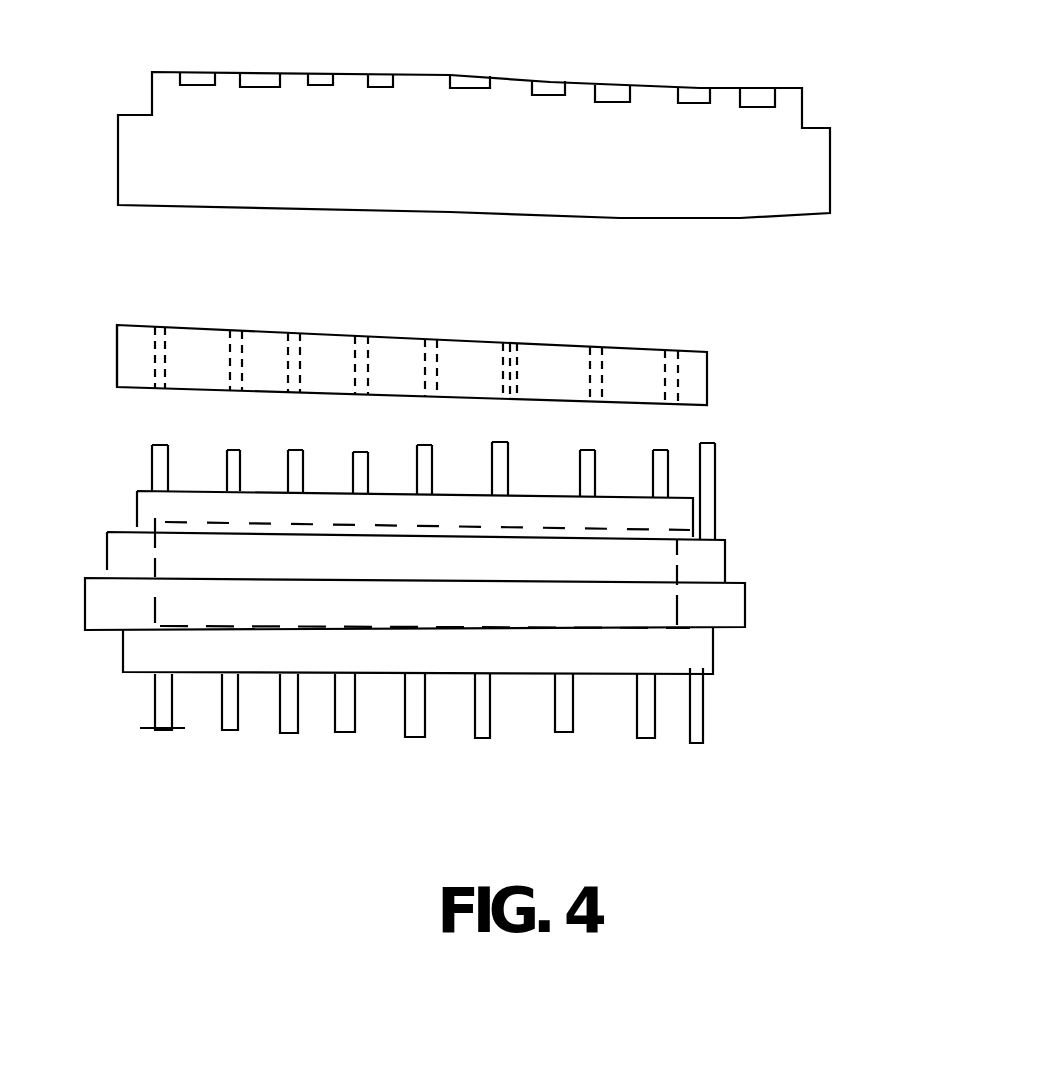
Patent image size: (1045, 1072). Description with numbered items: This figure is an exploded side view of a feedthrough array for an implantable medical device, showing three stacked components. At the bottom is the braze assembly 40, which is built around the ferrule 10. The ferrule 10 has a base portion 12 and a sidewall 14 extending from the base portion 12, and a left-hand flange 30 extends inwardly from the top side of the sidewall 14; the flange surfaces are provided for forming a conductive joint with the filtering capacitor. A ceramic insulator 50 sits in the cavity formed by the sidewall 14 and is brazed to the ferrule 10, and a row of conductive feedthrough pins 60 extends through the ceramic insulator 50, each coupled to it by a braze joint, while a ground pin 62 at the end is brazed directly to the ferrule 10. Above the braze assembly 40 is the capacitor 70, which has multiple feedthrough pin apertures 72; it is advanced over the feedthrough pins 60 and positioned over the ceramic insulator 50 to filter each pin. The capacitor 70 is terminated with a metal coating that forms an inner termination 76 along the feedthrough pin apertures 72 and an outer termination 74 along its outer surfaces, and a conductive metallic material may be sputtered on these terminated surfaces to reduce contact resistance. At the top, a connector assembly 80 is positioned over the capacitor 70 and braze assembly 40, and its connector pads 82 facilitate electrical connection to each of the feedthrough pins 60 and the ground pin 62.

The ferrule 10 is at (705, 606).
The base portion 12 is at (715, 655).
The sidewall 14 is at (705, 555).
The left-hand flange 30 is at (672, 520).
The braze assembly 40 is at (820, 577).
The ceramic insulator 50 is at (172, 555).
The feedthrough pins 60 is at (482, 743).
The ground pin 62 is at (693, 743).
The capacitor 70 is at (697, 377).
The feedthrough pin apertures 72 is at (655, 355).
The outer termination 74 is at (102, 363).
The inner termination 76 is at (531, 347).
The connector assembly 80 is at (792, 176).
The connector pads 82 is at (692, 88).